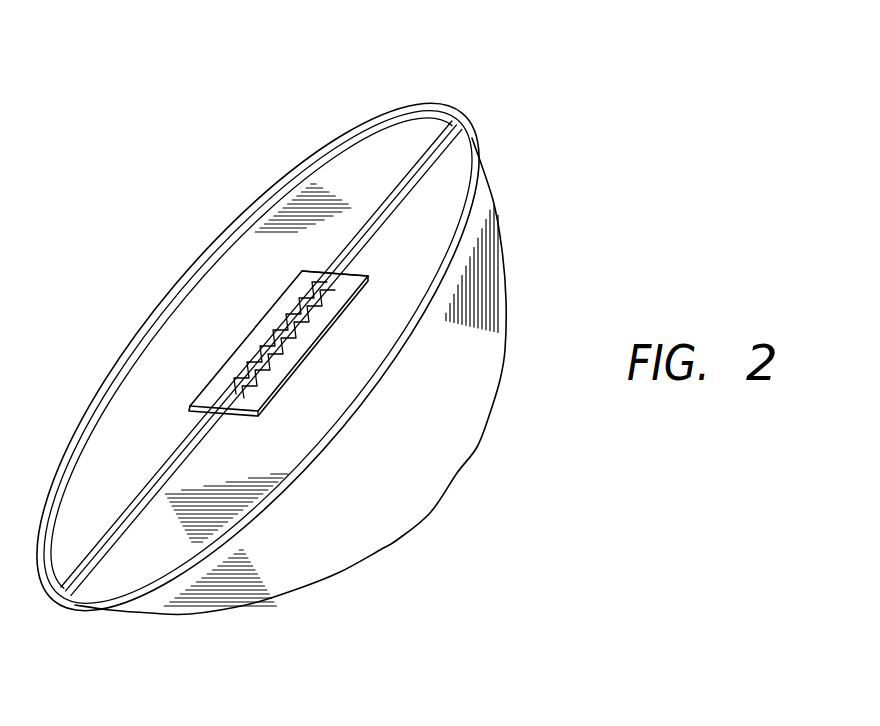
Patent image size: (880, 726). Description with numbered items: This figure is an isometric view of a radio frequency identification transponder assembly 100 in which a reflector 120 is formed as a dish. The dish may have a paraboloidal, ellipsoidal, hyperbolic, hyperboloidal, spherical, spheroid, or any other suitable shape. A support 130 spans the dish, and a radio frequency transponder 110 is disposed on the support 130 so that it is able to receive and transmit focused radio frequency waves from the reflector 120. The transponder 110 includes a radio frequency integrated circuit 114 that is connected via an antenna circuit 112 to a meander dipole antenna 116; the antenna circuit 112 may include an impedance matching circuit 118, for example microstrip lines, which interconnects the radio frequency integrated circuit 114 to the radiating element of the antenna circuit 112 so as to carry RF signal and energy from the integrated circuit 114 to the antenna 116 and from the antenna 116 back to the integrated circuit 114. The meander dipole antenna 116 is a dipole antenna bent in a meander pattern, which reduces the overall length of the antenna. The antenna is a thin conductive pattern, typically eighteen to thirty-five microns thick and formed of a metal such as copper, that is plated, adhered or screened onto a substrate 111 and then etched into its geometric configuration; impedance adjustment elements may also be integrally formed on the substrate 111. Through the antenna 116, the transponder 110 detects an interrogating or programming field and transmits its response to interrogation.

The sensor assembly 100 is at (615, 218).
The radio frequency transponder 110 is at (250, 333).
The substrate 111 is at (263, 383).
The antenna circuit 112 is at (217, 389).
The radio frequency integrated circuit 114 is at (312, 338).
The meander dipole antenna 116 is at (328, 283).
The impedance matching circuit 118 is at (297, 287).
The reflector 120 is at (490, 182).
The support 130 is at (407, 167).